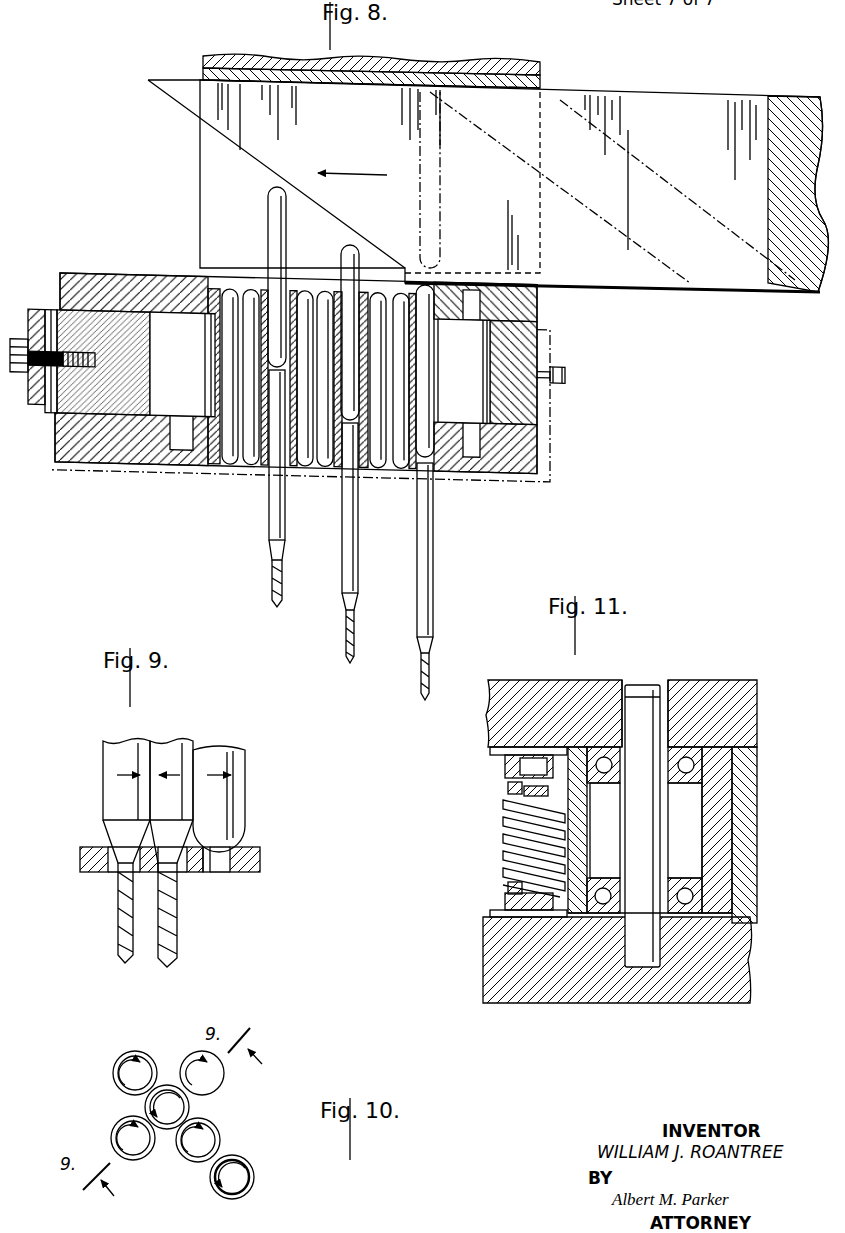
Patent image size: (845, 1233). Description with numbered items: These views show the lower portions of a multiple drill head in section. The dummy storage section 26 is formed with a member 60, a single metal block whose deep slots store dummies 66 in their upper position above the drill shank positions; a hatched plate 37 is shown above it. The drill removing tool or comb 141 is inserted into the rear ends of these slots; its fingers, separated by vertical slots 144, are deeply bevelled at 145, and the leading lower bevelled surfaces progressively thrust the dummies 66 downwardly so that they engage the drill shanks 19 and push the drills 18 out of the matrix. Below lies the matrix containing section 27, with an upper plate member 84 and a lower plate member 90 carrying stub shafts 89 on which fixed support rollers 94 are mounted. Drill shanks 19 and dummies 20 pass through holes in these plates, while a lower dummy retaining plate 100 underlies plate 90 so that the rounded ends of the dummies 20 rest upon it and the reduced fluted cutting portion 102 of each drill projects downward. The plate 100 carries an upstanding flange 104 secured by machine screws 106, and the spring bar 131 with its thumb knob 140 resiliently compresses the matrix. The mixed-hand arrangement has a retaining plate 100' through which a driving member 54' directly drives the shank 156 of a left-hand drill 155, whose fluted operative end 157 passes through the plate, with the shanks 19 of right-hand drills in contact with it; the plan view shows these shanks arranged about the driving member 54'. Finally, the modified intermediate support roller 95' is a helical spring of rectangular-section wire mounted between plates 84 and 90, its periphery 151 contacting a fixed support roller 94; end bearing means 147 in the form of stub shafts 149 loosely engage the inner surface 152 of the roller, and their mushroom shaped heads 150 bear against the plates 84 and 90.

In FIG. 8, the base plate 37 is at (240, 70).
In FIG. 8, the member 60 is at (247, 82).
In FIG. 8, the dummy storage section 26 is at (196, 191).
In FIG. 8, the tool or comb 141 is at (812, 91).
In FIG. 8, the vertical slots 144 is at (690, 137).
In FIG. 8, the bevel 145 is at (182, 110).
In FIG. 8, the dummies 66 is at (345, 248).
In FIG. 8, the lower dummy retaining plate 100 is at (296, 390).
In FIG. 8, the matrix containing section 27 is at (548, 314).
In FIG. 8, the spring bar 131 is at (46, 412).
In FIG. 8, the thumb knob 140 is at (22, 338).
In FIG. 8, the fixed support rollers 94 is at (198, 332).
In FIG. 11, the fixed support rollers 94 is at (580, 865).
In FIG. 8, the dummies 20 is at (255, 378).
In FIG. 8, the machine screws 106 is at (566, 378).
In FIG. 8, the upstanding flange 104 is at (556, 440).
In FIG. 8, the drill shanks 19 is at (268, 494).
In FIG. 9, the drill shanks 19 is at (118, 750).
In FIG. 10, the drill shanks 19 is at (140, 1051).
In FIG. 8, the drills 18 is at (262, 530).
In FIG. 9, the drills 18 is at (114, 912).
In FIG. 8, the fluted cutting portion 102 is at (272, 574).
In FIG. 9, the guide plate 100' is at (150, 842).
In FIG. 9, the left-hand drill 155 is at (187, 880).
In FIG. 9, the shank 156 is at (160, 752).
In FIG. 10, the shank 156 is at (190, 1112).
In FIG. 9, the driving member 54' is at (219, 782).
In FIG. 10, the driving member 54' is at (222, 1073).
In FIG. 9, the fluted operative ends 157 is at (185, 930).
In FIG. 11, the upper plate member 84 is at (530, 700).
In FIG. 11, the lower plate member 90 is at (490, 960).
In FIG. 11, the stub shafts 89 is at (650, 830).
In FIG. 11, the mushroom shaped heads 150 is at (498, 749).
In FIG. 11, the end bearing means 147 is at (500, 760).
In FIG. 11, the stub shafts 149 is at (525, 770).
In FIG. 11, the inner surface 152 is at (505, 798).
In FIG. 11, the periphery 151 is at (500, 820).
In FIG. 11, the modified intermediate support roller 95' is at (499, 857).